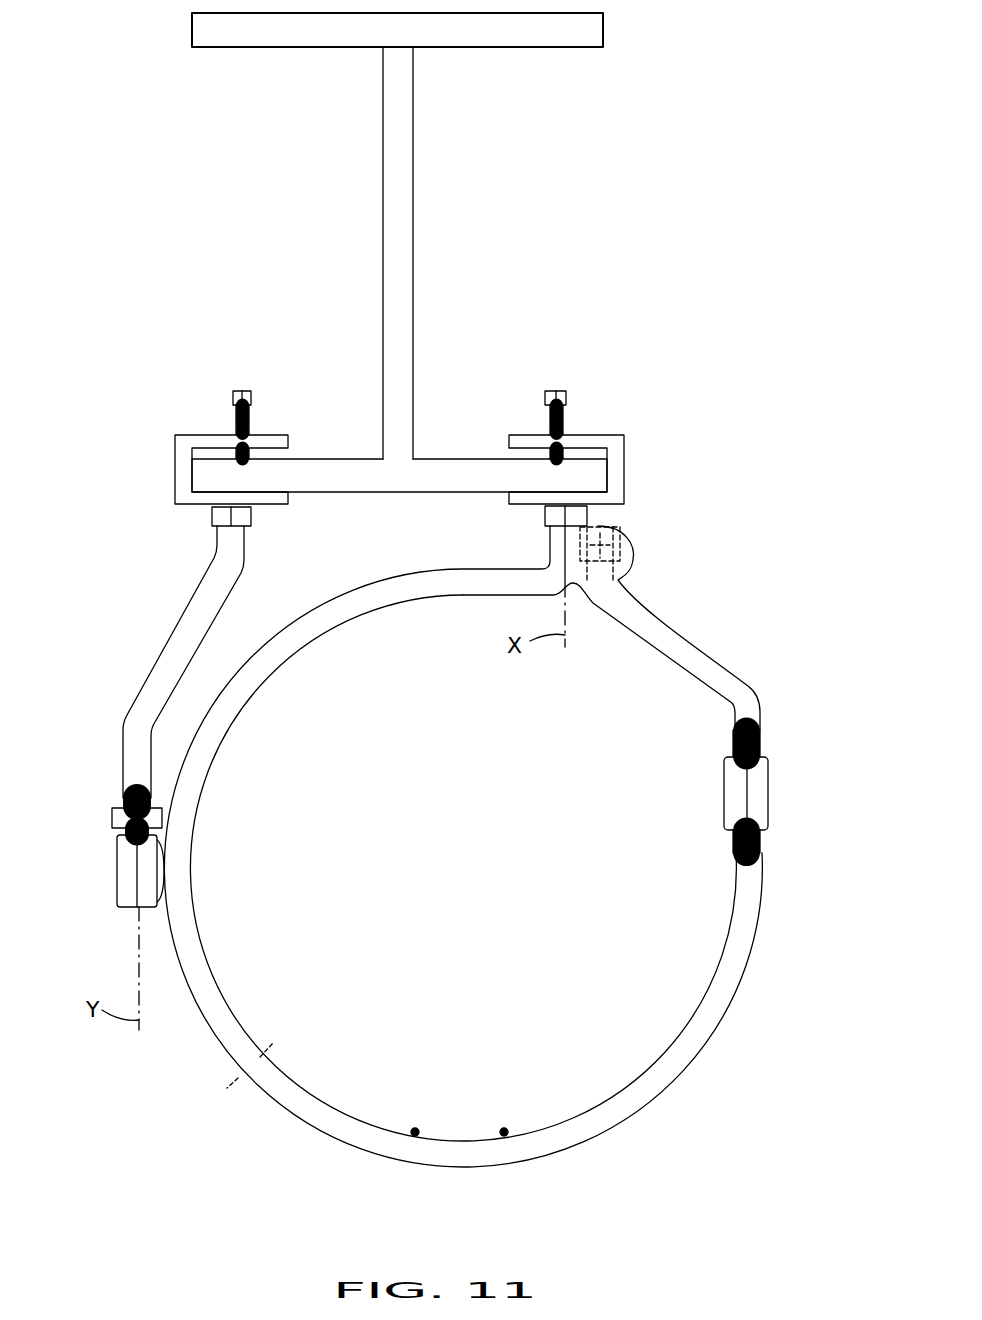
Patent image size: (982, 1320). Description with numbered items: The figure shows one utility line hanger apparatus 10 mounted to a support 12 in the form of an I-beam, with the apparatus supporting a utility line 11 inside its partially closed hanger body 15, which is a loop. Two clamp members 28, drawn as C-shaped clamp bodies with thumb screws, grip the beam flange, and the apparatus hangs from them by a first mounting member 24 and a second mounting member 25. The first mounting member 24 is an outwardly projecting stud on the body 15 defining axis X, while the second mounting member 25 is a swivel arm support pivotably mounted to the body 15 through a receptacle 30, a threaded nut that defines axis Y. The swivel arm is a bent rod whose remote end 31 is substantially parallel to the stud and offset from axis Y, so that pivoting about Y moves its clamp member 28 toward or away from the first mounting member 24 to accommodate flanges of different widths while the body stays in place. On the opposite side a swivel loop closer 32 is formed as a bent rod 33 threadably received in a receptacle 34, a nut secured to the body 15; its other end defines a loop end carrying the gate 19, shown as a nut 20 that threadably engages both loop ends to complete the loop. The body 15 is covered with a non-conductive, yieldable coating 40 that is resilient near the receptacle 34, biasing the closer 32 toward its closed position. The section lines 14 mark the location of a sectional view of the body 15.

The utility line hanger apparatus 10 is at (806, 1010).
The utility line 11 is at (502, 1130).
The support 12 is at (404, 226).
The strap cross-section lines 14 is at (254, 1068).
The hanger body 15 is at (704, 1056).
The gate 19 is at (777, 798).
The nut 20 is at (735, 797).
The first mounting member 24 is at (536, 528).
The second mounting member 25 is at (166, 635).
The clamp member 28 is at (257, 440).
The receptacle 30 is at (130, 872).
The remote end 31 is at (233, 528).
The swivel loop closer 32 is at (664, 665).
The bent rod 33 is at (660, 628).
The receptacle 34 is at (615, 538).
The coating 40 is at (590, 1127).